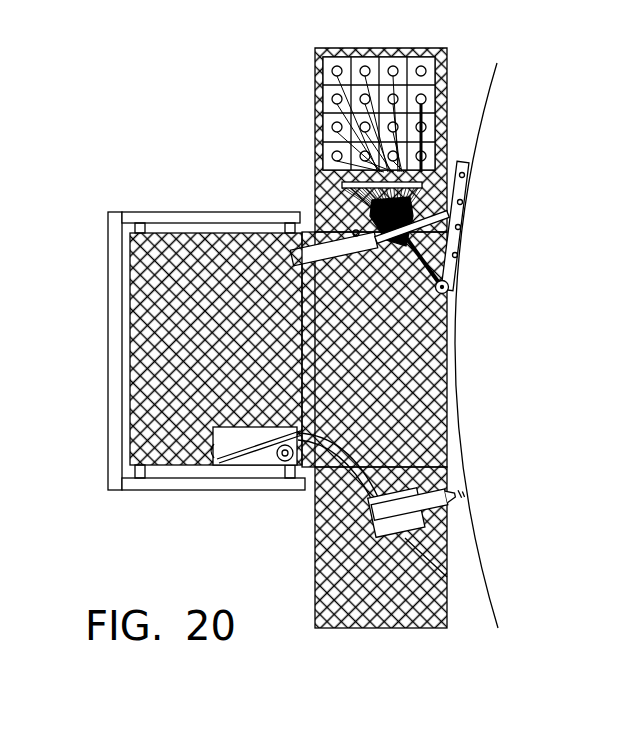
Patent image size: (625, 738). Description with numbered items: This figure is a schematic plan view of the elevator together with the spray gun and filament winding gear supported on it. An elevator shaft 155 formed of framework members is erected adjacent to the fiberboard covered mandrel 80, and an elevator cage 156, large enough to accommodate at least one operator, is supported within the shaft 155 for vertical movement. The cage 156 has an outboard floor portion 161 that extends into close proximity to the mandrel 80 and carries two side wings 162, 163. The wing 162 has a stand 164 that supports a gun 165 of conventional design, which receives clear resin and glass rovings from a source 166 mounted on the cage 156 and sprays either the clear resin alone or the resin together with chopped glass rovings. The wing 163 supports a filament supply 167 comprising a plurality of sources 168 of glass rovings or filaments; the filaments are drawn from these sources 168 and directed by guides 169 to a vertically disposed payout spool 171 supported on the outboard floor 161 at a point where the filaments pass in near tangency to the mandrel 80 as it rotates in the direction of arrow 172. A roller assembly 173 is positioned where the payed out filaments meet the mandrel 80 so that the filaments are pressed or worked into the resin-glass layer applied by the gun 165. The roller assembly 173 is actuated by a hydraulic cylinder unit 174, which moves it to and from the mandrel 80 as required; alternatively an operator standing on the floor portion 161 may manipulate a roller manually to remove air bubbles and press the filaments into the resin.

The mandrel 80 is at (476, 620).
The elevator shaft 155 is at (160, 214).
The elevator cage 156 is at (148, 285).
The outboard floor portion 161 is at (445, 392).
The side wing 162 is at (322, 572).
The side wing 163 is at (316, 114).
The stand 164 is at (447, 577).
The gun 165 is at (455, 492).
The source 166 is at (258, 460).
The filament supply 167 is at (433, 70).
The sources 168 is at (391, 66).
The guides 169 is at (328, 186).
The payout spool 171 is at (455, 300).
The arrow 172 is at (522, 120).
The roller assembly 173 is at (480, 210).
The hydraulic cylinder unit 174 is at (330, 207).